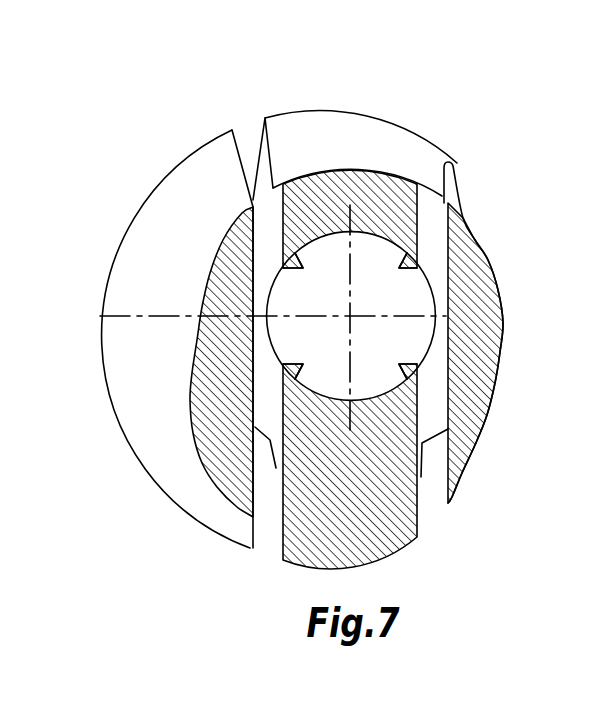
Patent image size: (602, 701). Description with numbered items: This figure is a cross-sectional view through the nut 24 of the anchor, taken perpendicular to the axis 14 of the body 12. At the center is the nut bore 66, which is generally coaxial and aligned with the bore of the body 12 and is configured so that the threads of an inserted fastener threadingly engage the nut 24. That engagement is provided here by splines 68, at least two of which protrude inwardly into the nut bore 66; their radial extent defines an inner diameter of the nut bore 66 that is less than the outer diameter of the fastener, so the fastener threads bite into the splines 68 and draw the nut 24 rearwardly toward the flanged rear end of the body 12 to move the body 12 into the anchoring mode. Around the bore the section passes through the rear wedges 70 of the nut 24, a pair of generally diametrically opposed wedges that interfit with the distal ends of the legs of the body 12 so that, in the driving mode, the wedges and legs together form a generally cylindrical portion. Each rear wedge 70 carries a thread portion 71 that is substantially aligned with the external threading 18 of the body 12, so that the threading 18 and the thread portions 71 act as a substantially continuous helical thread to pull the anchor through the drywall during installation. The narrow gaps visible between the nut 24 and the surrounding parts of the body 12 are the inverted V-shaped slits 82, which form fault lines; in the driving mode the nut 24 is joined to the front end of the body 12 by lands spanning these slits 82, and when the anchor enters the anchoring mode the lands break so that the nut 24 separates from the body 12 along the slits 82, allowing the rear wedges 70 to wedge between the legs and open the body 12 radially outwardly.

The body 12 is at (117, 251).
The axis 14 is at (352, 316).
The external threading 18 is at (128, 374).
The nut 24 is at (289, 576).
The bore 66 is at (308, 331).
The splines 68 is at (425, 280).
The rear wedge 70 is at (382, 208).
The thread portion 71 is at (337, 130).
The slits 82 is at (266, 203).